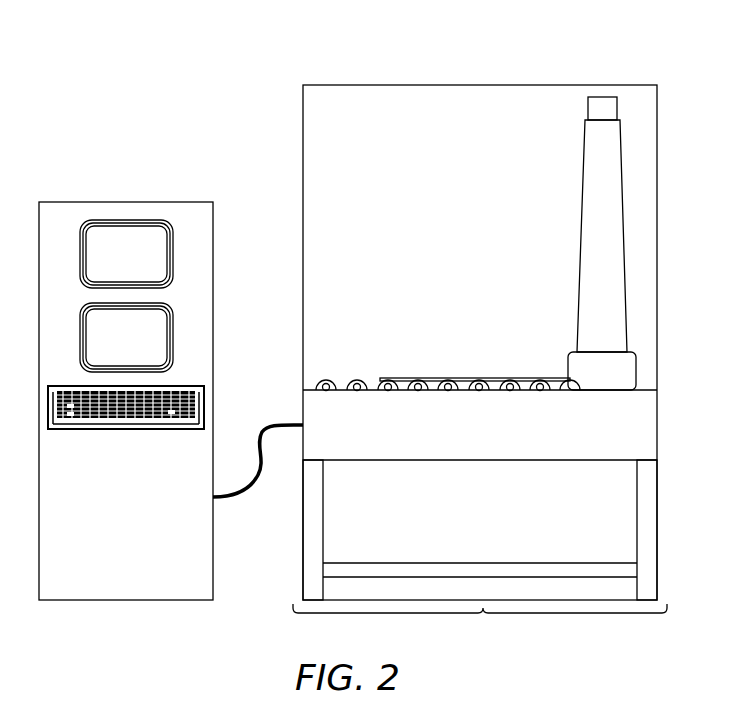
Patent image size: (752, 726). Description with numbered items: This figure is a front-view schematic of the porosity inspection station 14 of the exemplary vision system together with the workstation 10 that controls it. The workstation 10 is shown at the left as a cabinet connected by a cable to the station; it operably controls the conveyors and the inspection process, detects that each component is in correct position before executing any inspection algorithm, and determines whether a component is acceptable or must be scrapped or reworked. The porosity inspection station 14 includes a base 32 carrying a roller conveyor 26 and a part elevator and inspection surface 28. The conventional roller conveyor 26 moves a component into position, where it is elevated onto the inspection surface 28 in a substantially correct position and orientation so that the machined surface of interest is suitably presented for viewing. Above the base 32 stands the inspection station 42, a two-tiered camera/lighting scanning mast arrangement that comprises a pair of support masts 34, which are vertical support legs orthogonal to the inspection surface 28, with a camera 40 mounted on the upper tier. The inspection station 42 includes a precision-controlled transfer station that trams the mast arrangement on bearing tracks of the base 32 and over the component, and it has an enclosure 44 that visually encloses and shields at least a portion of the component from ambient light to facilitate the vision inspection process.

The workstation 10 is at (117, 208).
The porosity inspection station 14 is at (483, 613).
The roller conveyor 26 is at (357, 385).
The part elevator and inspection surface 28 is at (497, 379).
The base 32 is at (648, 425).
The support masts 34 is at (612, 234).
The camera 40 is at (610, 110).
The inspection station 42 is at (614, 210).
The enclosure 44 is at (488, 91).